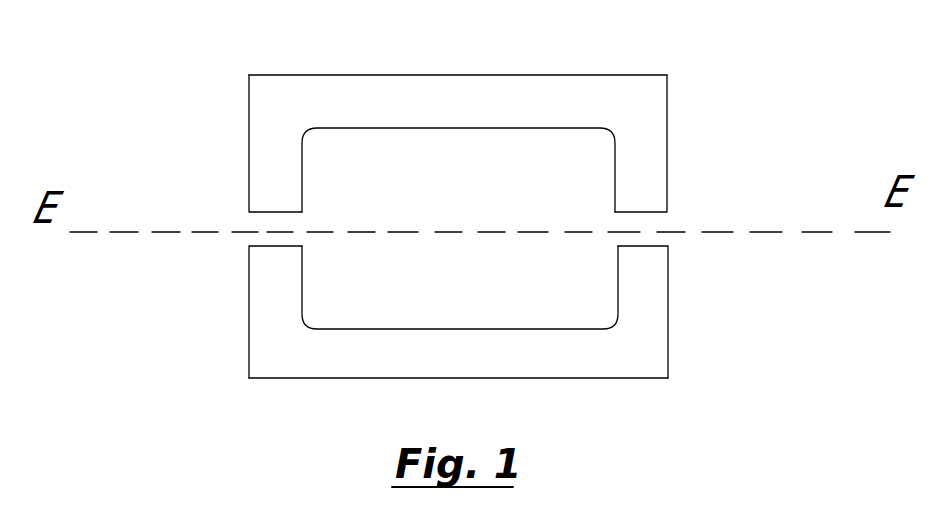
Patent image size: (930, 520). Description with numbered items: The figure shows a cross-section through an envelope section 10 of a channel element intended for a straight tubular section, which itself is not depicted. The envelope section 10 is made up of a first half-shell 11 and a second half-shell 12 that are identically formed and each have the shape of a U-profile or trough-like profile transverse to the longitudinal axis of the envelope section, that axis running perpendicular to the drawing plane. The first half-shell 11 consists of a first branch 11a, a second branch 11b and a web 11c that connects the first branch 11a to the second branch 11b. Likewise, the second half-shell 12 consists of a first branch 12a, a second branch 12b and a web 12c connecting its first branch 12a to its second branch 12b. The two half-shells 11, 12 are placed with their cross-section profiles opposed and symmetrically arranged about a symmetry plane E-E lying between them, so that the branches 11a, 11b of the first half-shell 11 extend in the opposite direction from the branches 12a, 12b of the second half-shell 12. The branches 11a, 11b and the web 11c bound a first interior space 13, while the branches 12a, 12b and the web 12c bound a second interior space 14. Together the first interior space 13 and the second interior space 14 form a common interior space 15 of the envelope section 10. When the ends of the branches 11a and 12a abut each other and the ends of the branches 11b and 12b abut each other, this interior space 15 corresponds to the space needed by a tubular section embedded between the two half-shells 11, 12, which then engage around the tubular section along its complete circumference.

The envelope section 10 is at (700, 103).
The first half-shell 11 is at (649, 322).
The first branch 11a is at (268, 305).
The second branch 11b is at (655, 342).
The web 11c is at (533, 363).
The second half-shell 12 is at (568, 92).
The first branch 12a is at (265, 138).
The second branch 12b is at (655, 145).
The web 12c is at (408, 98).
The first interior space 13 is at (372, 307).
The second interior space 14 is at (373, 150).
The common interior space 15 is at (555, 188).